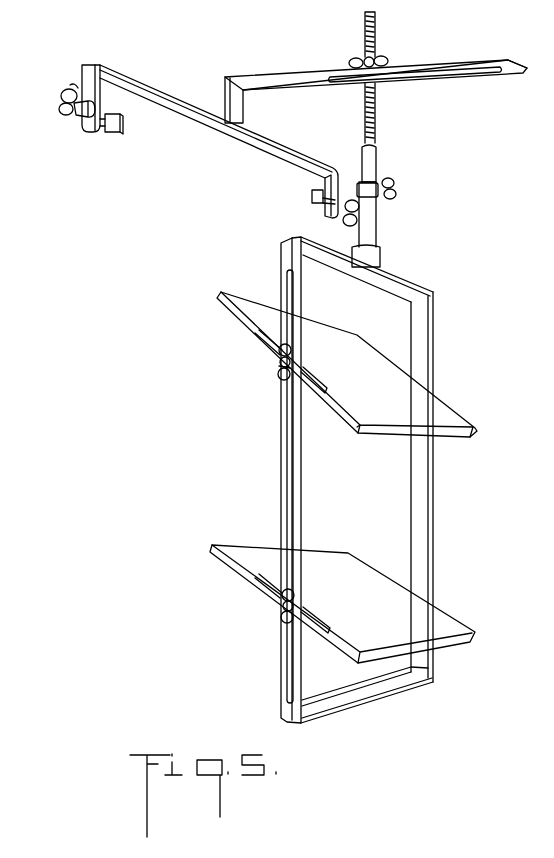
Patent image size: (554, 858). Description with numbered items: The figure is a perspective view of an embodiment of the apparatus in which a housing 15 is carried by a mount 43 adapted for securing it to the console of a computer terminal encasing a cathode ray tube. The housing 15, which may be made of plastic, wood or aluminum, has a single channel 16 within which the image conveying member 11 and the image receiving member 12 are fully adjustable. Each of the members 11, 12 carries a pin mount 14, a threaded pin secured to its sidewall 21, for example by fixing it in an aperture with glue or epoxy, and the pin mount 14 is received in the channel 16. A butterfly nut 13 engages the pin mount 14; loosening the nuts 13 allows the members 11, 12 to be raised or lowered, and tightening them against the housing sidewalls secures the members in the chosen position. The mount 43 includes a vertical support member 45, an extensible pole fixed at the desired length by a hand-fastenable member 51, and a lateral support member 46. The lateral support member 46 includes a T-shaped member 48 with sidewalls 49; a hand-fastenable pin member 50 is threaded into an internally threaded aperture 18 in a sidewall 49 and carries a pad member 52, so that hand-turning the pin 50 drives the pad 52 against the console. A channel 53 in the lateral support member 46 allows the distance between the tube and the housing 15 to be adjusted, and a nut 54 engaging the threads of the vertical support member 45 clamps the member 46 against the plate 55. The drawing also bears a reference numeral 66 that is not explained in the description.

The image conveying member 11 is at (455, 418).
The image receiving member 12 is at (452, 627).
The butterfly nut 13 is at (282, 378).
The pin mount 14 is at (278, 363).
The housing 15 is at (232, 446).
The channel 16 is at (288, 693).
The internally threaded aperture 18 is at (87, 128).
The sidewall 21 is at (352, 423).
The mount 43 is at (320, 50).
The vertical support member 45 is at (377, 122).
The lateral support member 46 is at (518, 65).
The T-shaped member 48 is at (227, 77).
The sidewall 49 is at (85, 82).
The hand-fastenable pin member 50 is at (67, 113).
The hand-fastenable member 51 is at (393, 195).
The pad member 52 is at (120, 133).
The channel 53 is at (468, 77).
The nut 54 is at (383, 62).
The plate 55 is at (373, 75).
The reference element 66 is at (553, 747).